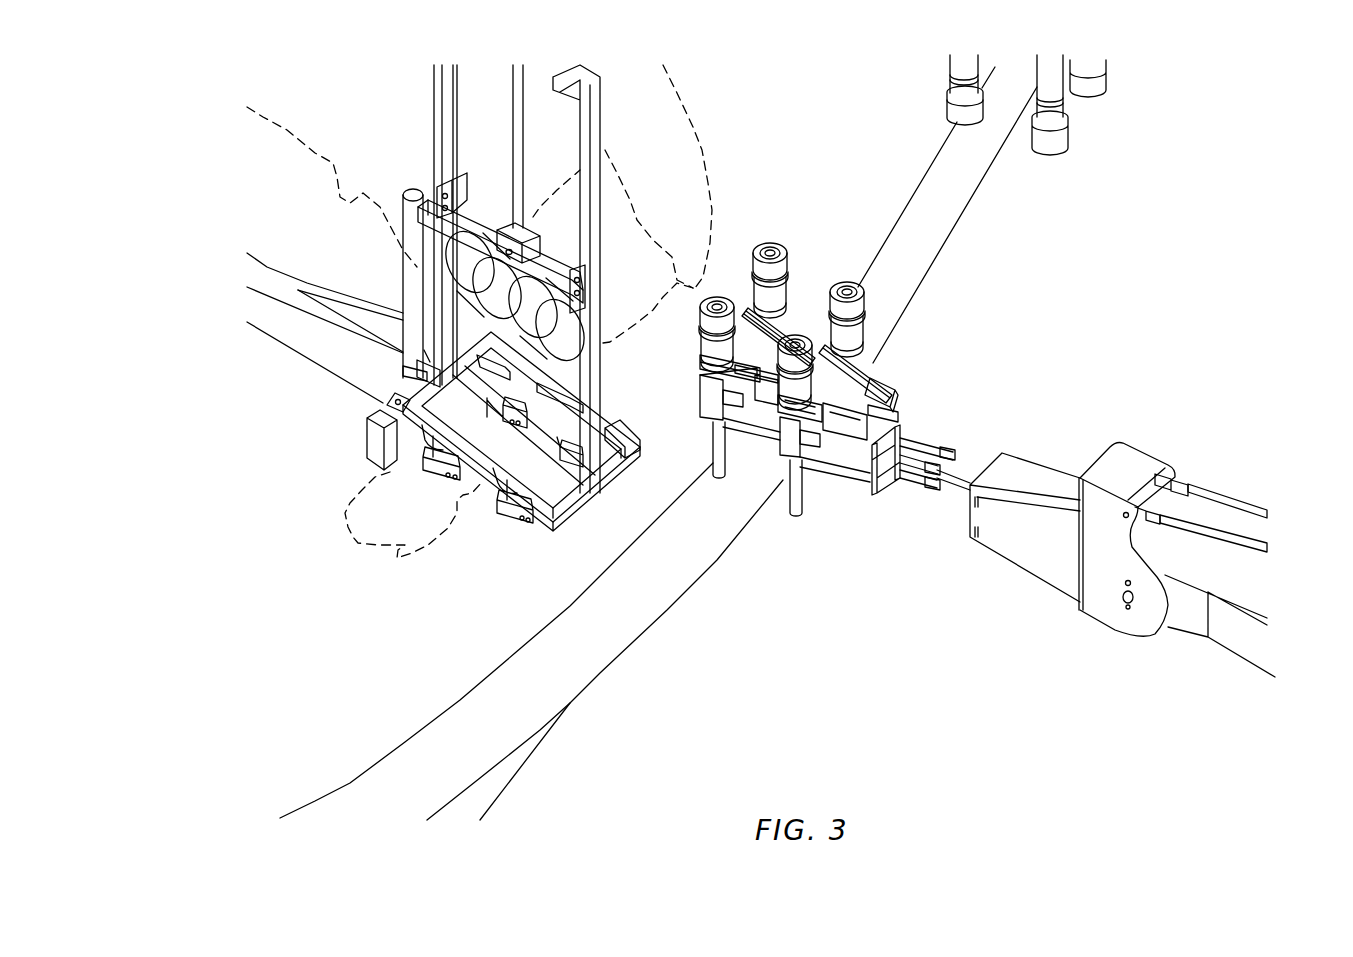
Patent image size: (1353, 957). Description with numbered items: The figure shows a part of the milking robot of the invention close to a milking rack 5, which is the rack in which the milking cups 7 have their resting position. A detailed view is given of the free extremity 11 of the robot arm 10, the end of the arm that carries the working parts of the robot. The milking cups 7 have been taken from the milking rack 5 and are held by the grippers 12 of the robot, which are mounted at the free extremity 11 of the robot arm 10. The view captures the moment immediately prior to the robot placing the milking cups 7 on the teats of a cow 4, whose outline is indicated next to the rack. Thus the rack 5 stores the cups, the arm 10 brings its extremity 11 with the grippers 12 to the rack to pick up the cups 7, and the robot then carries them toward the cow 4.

The cow 4 is at (703, 148).
The milking rack 5 is at (565, 527).
The milking cups 7 is at (790, 267).
The robot arm 10 is at (1213, 572).
The free extremity 11 is at (967, 472).
The grippers 12 is at (708, 422).